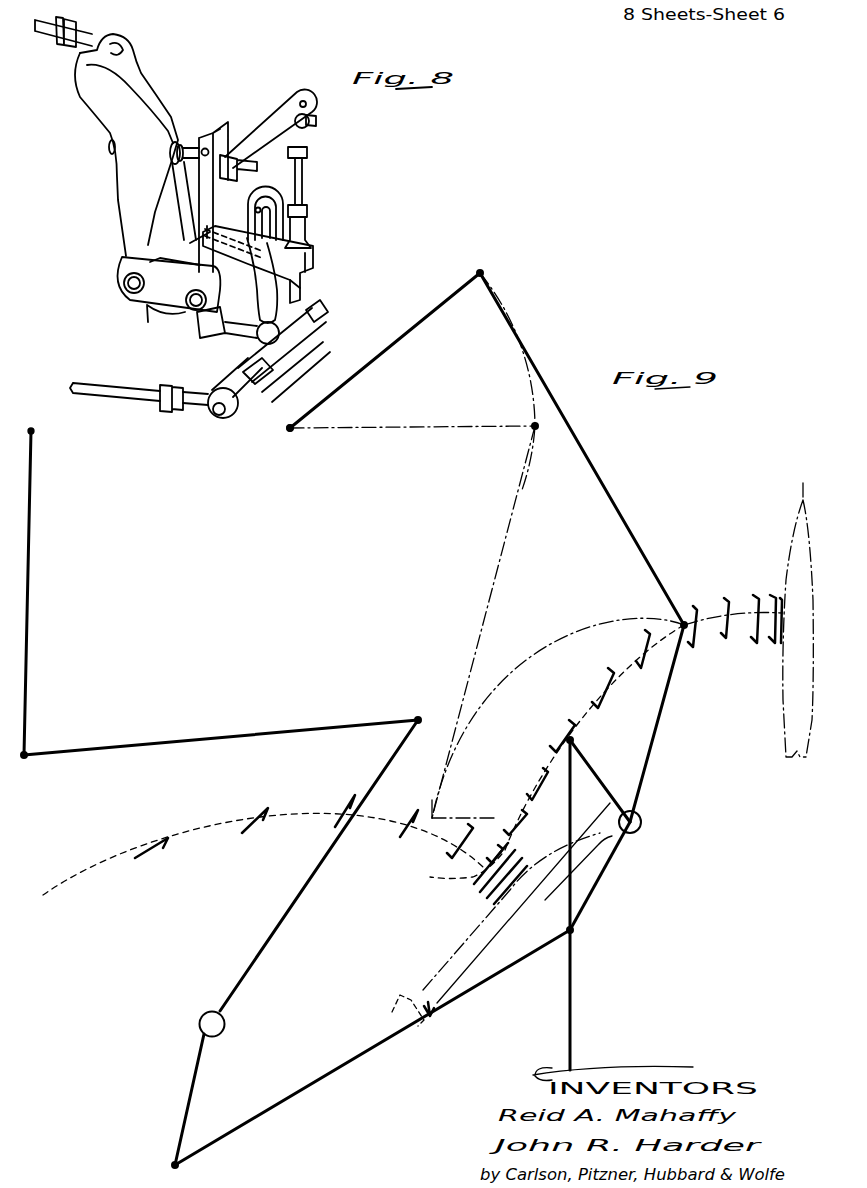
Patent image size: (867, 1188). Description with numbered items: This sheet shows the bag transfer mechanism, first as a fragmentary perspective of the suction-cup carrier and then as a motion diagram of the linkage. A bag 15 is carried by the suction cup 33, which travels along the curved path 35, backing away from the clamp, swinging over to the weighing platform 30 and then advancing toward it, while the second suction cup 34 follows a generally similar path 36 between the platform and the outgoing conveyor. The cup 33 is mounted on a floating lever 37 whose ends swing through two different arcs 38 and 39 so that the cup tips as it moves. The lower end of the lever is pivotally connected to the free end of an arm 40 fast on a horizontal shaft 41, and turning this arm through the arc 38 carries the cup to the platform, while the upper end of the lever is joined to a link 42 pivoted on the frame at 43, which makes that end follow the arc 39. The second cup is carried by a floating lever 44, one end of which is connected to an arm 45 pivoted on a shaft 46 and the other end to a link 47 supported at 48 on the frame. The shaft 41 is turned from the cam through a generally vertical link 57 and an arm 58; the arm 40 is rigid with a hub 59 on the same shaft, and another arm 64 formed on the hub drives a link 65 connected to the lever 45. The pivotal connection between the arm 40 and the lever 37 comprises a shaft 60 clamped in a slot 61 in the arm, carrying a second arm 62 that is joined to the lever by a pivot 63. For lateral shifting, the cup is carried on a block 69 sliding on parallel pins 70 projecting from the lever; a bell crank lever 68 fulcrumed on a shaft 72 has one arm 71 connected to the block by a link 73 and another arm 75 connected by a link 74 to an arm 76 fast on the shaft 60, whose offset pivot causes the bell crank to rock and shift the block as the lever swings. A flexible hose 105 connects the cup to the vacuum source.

In FIG. 9, the bag 15 is at (790, 556).
In FIG. 9, the weighing platform 30 is at (420, 1002).
In FIG. 8, the suction cup 33 is at (292, 358).
In FIG. 9, the suction cup 33 is at (780, 598).
In FIG. 9, the suction cup 34 is at (463, 873).
In FIG. 9, the curved path 35 is at (703, 628).
In FIG. 9, the path 36 is at (286, 815).
In FIG. 8, the floating lever 37 is at (120, 192).
In FIG. 9, the floating lever 37 is at (643, 546).
In FIG. 9, the arc 38 is at (571, 627).
In FIG. 9, the arc 39 is at (530, 397).
In FIG. 8, the arm 40 is at (292, 306).
In FIG. 9, the arm 40 is at (653, 740).
In FIG. 8, the horizontal shaft 41 is at (320, 322).
In FIG. 9, the horizontal shaft 41 is at (641, 823).
In FIG. 8, the link 42 is at (49, 36).
In FIG. 9, the link 42 is at (405, 331).
In FIG. 9, the pivot 43 is at (292, 430).
In FIG. 9, the floating lever 44 is at (332, 728).
In FIG. 9, the arm 45 is at (257, 959).
In FIG. 9, the horizontal shaft 46 is at (206, 1011).
In FIG. 9, the link 47 is at (28, 652).
In FIG. 9, the pivot 48 is at (33, 433).
In FIG. 9, the vertical link 57 is at (571, 1004).
In FIG. 9, the arm 58 is at (600, 786).
In FIG. 8, the hub 59 is at (309, 342).
In FIG. 8, the horizontal shaft 60 is at (254, 222).
In FIG. 8, the slot 61 is at (255, 206).
In FIG. 8, the second arm 62 is at (314, 270).
In FIG. 8, the pivot 63 is at (302, 288).
In FIG. 8, the arm 64 is at (234, 377).
In FIG. 9, the arm 64 is at (596, 885).
In FIG. 9, the link 65 is at (370, 1052).
In FIG. 8, the bell crank lever 68 is at (244, 127).
In FIG. 8, the block 69 is at (150, 294).
In FIG. 8, the parallel pins 70 is at (124, 285).
In FIG. 8, the arm 71 is at (186, 214).
In FIG. 8, the shaft 72 is at (258, 167).
In FIG. 8, the link 73 is at (192, 242).
In FIG. 8, the link 74 is at (305, 187).
In FIG. 8, the arm 75 is at (279, 114).
In FIG. 8, the arm 76 is at (318, 250).
In FIG. 8, the flexible hose 105 is at (150, 323).